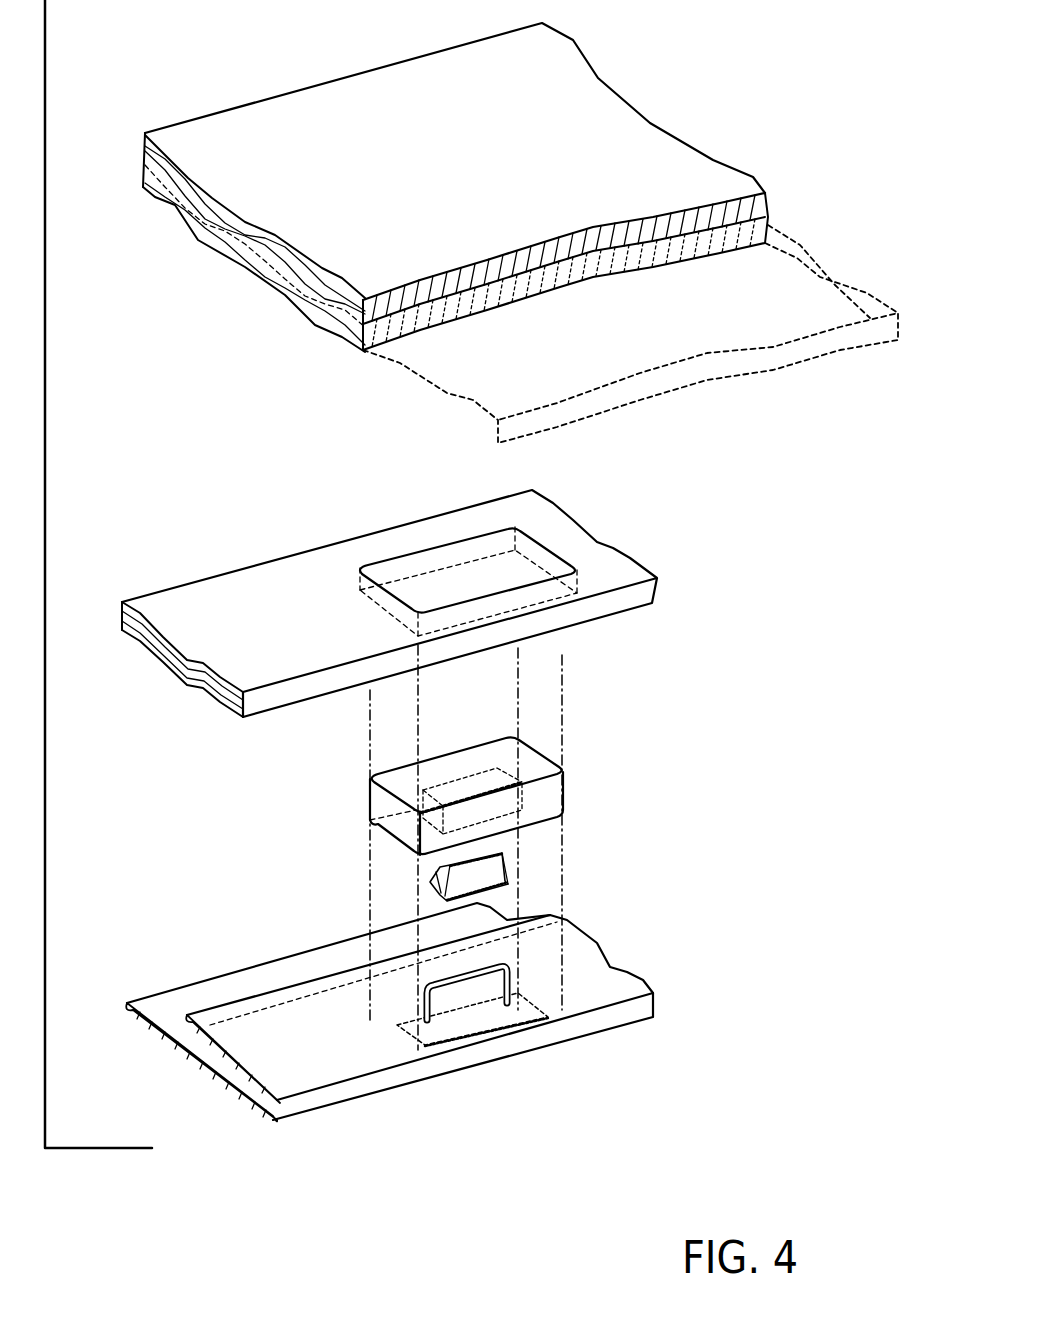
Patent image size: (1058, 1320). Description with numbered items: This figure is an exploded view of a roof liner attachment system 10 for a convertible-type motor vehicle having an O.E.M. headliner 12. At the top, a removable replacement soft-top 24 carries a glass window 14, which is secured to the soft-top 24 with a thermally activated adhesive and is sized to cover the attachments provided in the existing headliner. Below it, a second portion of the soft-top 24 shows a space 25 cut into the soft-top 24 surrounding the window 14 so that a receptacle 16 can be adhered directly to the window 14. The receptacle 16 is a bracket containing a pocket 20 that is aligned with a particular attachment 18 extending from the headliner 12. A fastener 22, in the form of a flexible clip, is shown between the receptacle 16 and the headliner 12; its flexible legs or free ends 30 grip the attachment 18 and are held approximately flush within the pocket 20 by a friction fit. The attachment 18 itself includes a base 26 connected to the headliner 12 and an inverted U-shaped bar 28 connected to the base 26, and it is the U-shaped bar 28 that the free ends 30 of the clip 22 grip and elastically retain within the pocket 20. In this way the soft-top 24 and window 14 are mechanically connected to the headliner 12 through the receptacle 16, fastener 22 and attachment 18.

The roof liner attachment system 10 is at (758, 517).
The O.E.M. headliner 12 is at (283, 1118).
The window 14 is at (767, 238).
The receptacle 16 is at (565, 797).
The attachment 18 is at (425, 983).
The pocket 20 is at (475, 777).
The fastener 22 is at (495, 890).
The soft-top 24 is at (615, 115).
The space 25 is at (418, 552).
The base 26 is at (465, 1032).
The inverted U-shaped bar 28 is at (415, 992).
The free ends 30 is at (505, 870).